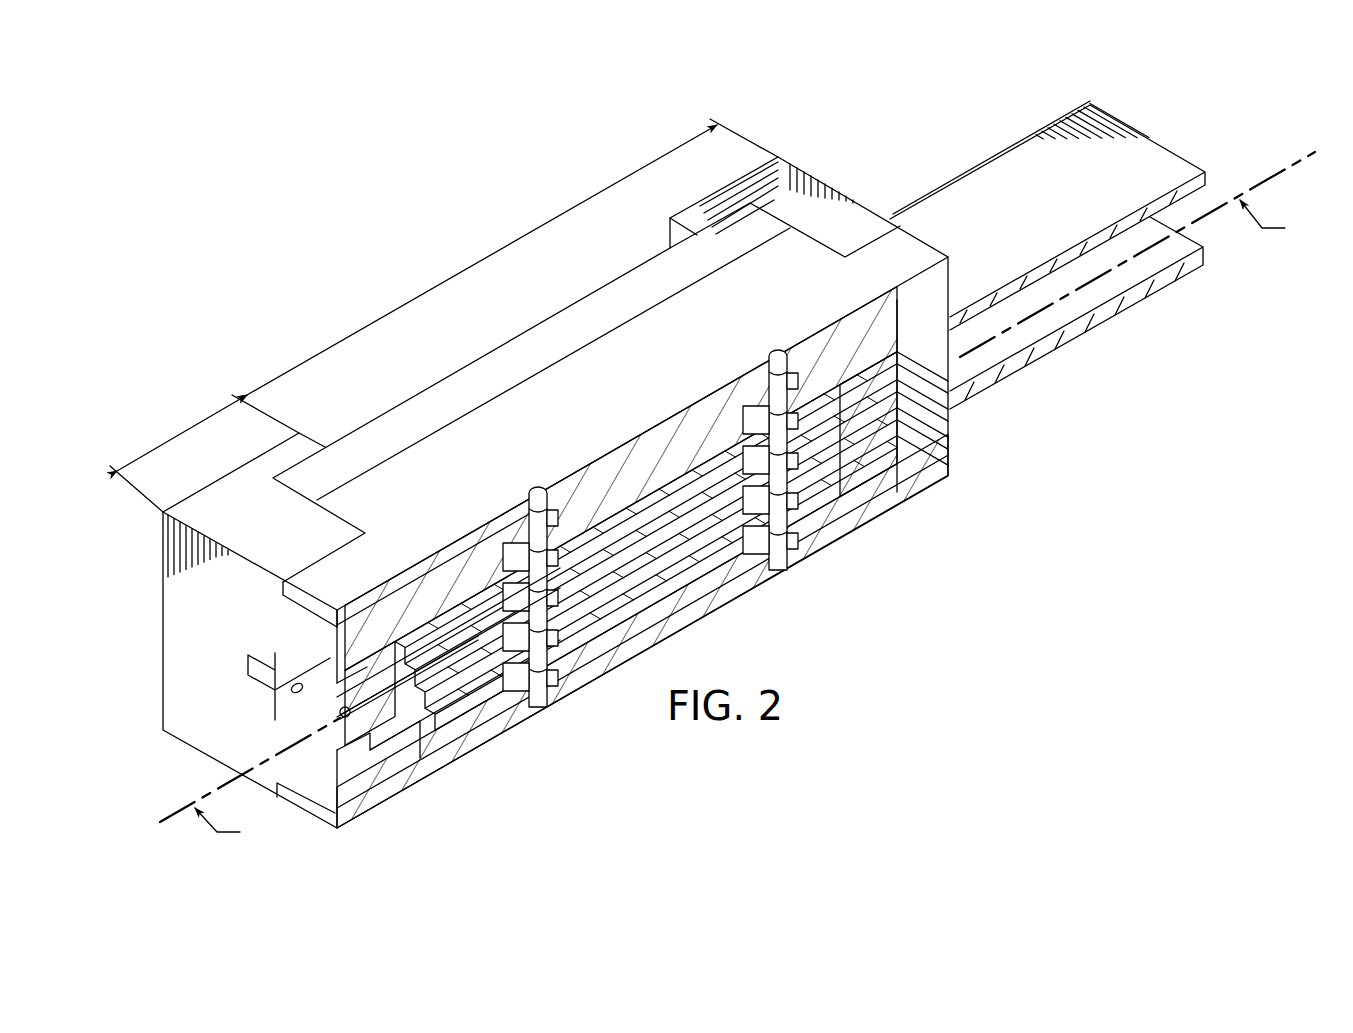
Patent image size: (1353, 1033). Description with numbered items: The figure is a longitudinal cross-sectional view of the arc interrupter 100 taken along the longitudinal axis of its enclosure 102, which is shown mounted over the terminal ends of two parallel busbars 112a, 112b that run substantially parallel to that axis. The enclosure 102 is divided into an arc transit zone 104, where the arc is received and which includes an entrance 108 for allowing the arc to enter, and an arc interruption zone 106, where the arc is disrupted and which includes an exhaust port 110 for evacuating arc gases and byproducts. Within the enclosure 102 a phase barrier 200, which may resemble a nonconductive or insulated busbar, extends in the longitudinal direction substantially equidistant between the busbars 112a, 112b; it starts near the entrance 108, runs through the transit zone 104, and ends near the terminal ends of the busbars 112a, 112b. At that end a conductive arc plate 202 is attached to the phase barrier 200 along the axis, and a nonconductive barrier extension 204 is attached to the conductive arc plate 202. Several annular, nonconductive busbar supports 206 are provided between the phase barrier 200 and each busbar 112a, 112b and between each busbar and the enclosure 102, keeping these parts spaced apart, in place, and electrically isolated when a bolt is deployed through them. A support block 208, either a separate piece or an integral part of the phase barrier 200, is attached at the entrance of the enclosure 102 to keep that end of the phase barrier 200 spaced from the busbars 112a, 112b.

The arc interrupter 100 is at (366, 134).
The enclosure 102 is at (498, 413).
The arc transit zone 104 is at (483, 260).
The arc interruption zone 106 is at (166, 438).
The entrance 108 is at (880, 194).
The exhaust port 110 is at (248, 672).
The busbar 112a is at (1149, 134).
The busbar 112b is at (1080, 338).
The phase barrier 200 is at (487, 633).
The conductive arc plate 202 is at (443, 677).
The nonconductive barrier extension 204 is at (317, 697).
The annular busbar support 206 is at (800, 512).
The support block 208 is at (935, 394).